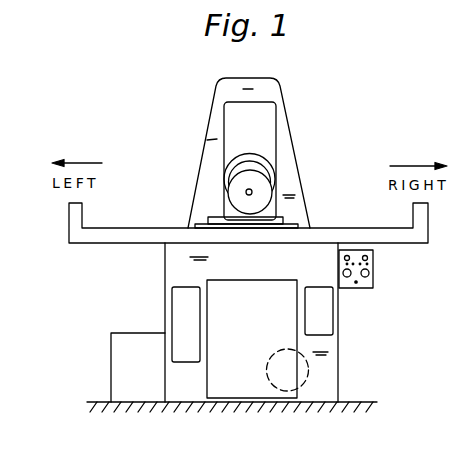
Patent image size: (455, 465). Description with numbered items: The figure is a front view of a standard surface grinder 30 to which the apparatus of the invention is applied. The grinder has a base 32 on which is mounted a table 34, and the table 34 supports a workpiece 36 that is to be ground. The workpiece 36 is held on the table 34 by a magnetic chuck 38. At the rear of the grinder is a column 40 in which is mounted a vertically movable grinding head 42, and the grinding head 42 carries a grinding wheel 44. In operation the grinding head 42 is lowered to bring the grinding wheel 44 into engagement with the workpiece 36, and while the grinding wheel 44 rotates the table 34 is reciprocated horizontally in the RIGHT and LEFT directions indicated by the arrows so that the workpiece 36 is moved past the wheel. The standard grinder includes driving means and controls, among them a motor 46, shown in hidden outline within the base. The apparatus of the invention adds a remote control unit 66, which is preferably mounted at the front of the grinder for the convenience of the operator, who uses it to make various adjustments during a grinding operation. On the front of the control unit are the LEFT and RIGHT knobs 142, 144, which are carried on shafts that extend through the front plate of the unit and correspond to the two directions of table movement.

The surface grinder 30 is at (341, 111).
The base 32 is at (111, 368).
The table 34 is at (95, 243).
The workpiece 36 is at (213, 216).
The magnetic chuck 38 is at (203, 223).
The column 40 is at (212, 101).
The grinding head 42 is at (255, 153).
The grinding wheel 44 is at (263, 192).
The motor 46 is at (263, 356).
The remote control unit 66 is at (357, 289).
The LEFT knob 142 is at (343, 273).
The RIGHT knob 144 is at (370, 273).